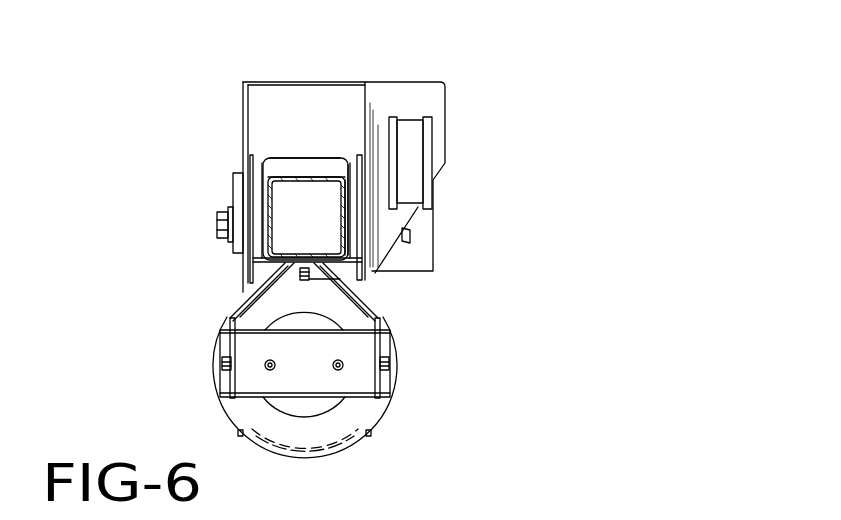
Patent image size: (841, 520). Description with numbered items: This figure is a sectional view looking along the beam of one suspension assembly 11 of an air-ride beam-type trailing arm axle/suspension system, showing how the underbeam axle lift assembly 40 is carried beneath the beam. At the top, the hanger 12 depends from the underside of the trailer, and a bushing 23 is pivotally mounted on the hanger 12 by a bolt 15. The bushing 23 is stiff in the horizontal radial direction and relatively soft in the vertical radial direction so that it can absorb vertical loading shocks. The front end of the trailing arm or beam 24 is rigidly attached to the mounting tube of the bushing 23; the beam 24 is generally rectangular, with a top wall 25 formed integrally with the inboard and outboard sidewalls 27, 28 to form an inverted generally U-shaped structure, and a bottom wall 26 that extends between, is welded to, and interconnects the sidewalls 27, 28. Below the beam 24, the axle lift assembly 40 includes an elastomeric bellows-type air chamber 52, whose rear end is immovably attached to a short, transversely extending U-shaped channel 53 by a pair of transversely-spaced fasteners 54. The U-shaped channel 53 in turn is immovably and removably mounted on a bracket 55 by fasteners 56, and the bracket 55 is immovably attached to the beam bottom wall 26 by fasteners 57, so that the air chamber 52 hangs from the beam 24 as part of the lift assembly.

The suspension assembly 11 is at (470, 114).
The hanger 12 is at (227, 122).
The bolt 15 is at (217, 225).
The bushing 23 is at (352, 178).
The trailing arm or beam 24 is at (328, 158).
The top wall 25 is at (285, 178).
The bottom wall 26 is at (340, 279).
The inboard sidewall 27 is at (350, 240).
The outboard sidewall 28 is at (262, 193).
The axle lift assembly 40 is at (327, 388).
The air chamber 52 is at (338, 437).
The U-shaped channel 53 is at (357, 343).
The fasteners 54 is at (338, 370).
The bracket 55 is at (230, 318).
The fasteners 56 is at (222, 362).
The fasteners 57 is at (302, 282).